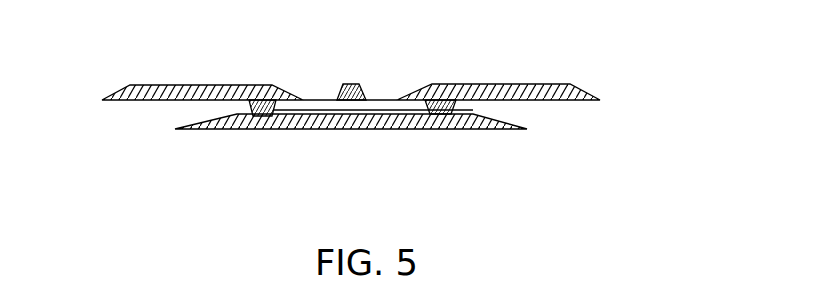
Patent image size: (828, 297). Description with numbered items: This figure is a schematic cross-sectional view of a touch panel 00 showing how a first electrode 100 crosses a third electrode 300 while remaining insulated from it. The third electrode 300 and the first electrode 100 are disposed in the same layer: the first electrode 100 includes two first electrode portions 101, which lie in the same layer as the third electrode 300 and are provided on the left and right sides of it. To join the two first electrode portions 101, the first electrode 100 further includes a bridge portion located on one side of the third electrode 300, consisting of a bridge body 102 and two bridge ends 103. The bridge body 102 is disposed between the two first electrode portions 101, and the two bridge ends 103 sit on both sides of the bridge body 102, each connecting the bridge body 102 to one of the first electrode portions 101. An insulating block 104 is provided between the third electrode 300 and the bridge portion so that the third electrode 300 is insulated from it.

The first electrode 100 is at (327, 71).
The touch panel 00 is at (127, 55).
The first electrode portion 101 is at (174, 68).
The bridge body 102 is at (472, 114).
The bridge end 103 is at (257, 108).
The insulating block 104 is at (310, 100).
The third electrode 300 is at (354, 84).